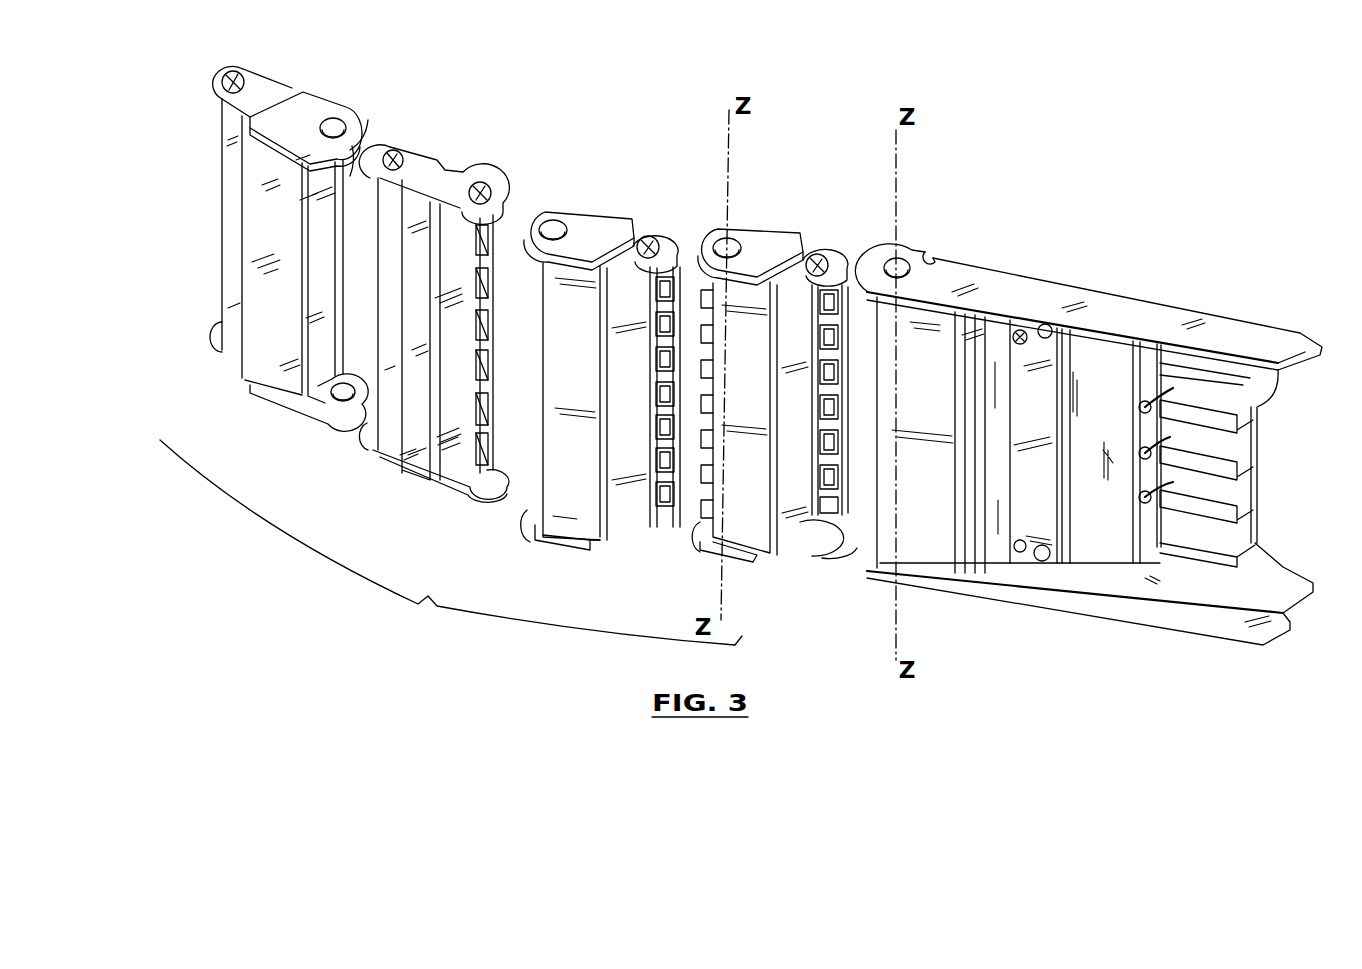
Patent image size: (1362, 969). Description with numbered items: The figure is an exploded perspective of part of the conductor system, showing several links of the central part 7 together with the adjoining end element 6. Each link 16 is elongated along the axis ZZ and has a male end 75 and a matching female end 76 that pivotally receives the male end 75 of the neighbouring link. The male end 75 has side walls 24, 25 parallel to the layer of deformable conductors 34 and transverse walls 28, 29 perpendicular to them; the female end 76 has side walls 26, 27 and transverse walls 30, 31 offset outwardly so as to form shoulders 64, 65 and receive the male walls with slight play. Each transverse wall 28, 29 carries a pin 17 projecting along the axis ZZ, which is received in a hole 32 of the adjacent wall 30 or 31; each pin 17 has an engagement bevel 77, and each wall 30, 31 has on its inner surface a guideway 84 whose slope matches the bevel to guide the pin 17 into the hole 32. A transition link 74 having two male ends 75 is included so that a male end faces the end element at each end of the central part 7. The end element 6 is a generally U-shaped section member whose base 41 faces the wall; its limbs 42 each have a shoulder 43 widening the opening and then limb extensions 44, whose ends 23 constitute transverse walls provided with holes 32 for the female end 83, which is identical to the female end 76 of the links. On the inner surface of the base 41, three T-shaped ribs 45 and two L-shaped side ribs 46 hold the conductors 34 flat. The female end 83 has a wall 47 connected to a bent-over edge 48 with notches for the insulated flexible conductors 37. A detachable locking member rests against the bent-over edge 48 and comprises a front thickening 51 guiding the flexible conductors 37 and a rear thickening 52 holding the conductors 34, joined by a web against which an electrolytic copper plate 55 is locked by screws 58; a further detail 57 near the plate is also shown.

The end element 6 is at (1152, 300).
The central part 7 is at (451, 542).
The link 16 is at (342, 102).
The pin 17 is at (213, 97).
The end of limb extension 23 is at (937, 268).
The side wall 24 is at (870, 278).
The side wall 25 is at (233, 277).
The side wall 26 is at (345, 272).
The side wall 27 is at (272, 396).
The transverse wall 28 is at (368, 132).
The transverse wall 29 is at (278, 86).
The transverse wall 30 is at (340, 412).
The transverse wall 31 is at (545, 552).
The hole 32 is at (350, 122).
The deformable conductor 34 is at (845, 342).
The flexible conductor 37 is at (1140, 400).
The base 41 is at (1250, 478).
The limb 42 is at (1300, 584).
The shoulder 43 is at (1282, 630).
The limb extension 44 is at (1232, 622).
The T-shaped rib 45 is at (1232, 420).
The L-shaped side rib 46 is at (1262, 552).
The wall 47 is at (890, 585).
The bent-over edge 48 is at (990, 577).
The front thickening 51 is at (1110, 600).
The rear thickening 52 is at (1042, 565).
The electrolytic copper plate 55 is at (1080, 578).
The hole 57 is at (1047, 322).
The screw 58 is at (1020, 328).
The shoulder 64 is at (243, 378).
The shoulder 65 is at (447, 472).
The transition link 74 is at (435, 148).
The male end 75 is at (212, 225).
The female end 76 is at (307, 392).
The engagement bevel 77 is at (254, 72).
The female end 83 is at (878, 518).
The guideway 84 is at (350, 160).